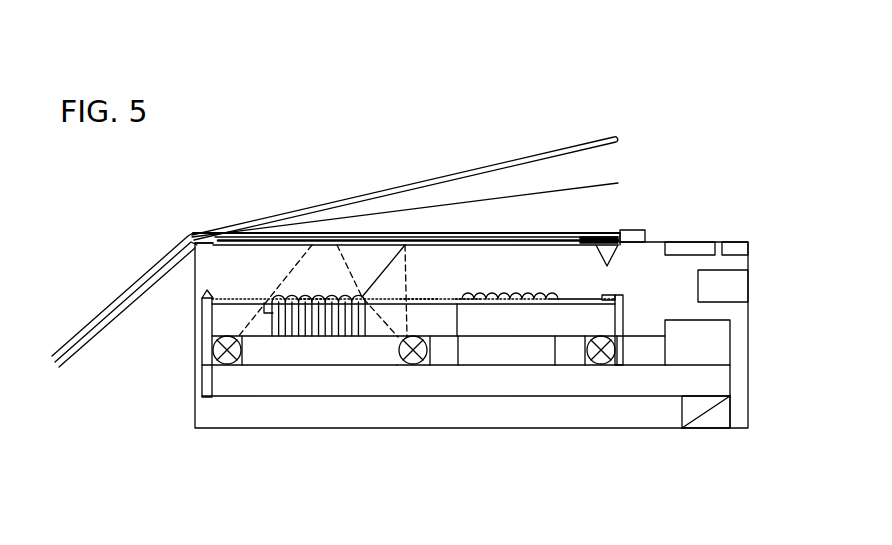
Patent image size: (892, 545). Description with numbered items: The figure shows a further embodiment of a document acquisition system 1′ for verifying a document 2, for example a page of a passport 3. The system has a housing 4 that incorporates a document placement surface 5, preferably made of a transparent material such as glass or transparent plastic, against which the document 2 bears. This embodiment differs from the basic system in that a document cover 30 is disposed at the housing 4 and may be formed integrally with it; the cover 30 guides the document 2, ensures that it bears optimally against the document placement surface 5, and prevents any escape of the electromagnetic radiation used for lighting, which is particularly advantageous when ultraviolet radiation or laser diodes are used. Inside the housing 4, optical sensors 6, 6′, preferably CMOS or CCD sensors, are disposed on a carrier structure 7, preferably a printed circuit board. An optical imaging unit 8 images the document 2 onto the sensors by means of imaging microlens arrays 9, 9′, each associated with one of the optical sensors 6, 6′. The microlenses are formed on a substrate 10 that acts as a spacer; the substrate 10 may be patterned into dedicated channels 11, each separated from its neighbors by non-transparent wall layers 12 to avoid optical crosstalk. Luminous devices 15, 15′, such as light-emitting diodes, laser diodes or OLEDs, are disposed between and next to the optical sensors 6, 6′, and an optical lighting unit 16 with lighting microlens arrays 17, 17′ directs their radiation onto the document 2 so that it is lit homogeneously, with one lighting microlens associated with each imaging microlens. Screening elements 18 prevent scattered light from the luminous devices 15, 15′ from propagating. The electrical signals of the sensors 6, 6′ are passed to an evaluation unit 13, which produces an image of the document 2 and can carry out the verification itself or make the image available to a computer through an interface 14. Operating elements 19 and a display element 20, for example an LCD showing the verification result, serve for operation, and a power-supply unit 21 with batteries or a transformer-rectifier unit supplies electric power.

The document acquisition system 1′ is at (728, 178).
The document 2 is at (621, 242).
The passport 3 is at (203, 233).
The housing 4 is at (193, 418).
The document placement surface 5 is at (217, 250).
The optical sensor 6 is at (312, 357).
The optical sensor 6′ is at (493, 360).
The carrier structure 7 is at (243, 393).
The optical imaging unit 8 is at (304, 298).
The imaging microlens array 9 is at (288, 298).
The imaging microlens array 9′ is at (465, 298).
The substrate 10 is at (497, 318).
The channel 11 is at (305, 338).
The non-transparent wall layer 12 is at (280, 298).
The evaluation unit 13 is at (680, 355).
The interface 14 is at (708, 410).
The luminous device 15 is at (222, 367).
The luminous device 15′ is at (412, 368).
The optical lighting unit 16 is at (233, 300).
The lighting microlens array 17 is at (238, 298).
The lighting microlens array 17′ is at (420, 298).
The screening element 18 is at (222, 248).
The operating element 19 is at (738, 248).
The display element 20 is at (708, 248).
The power-supply unit 21 is at (738, 289).
The document cover 30 is at (520, 236).